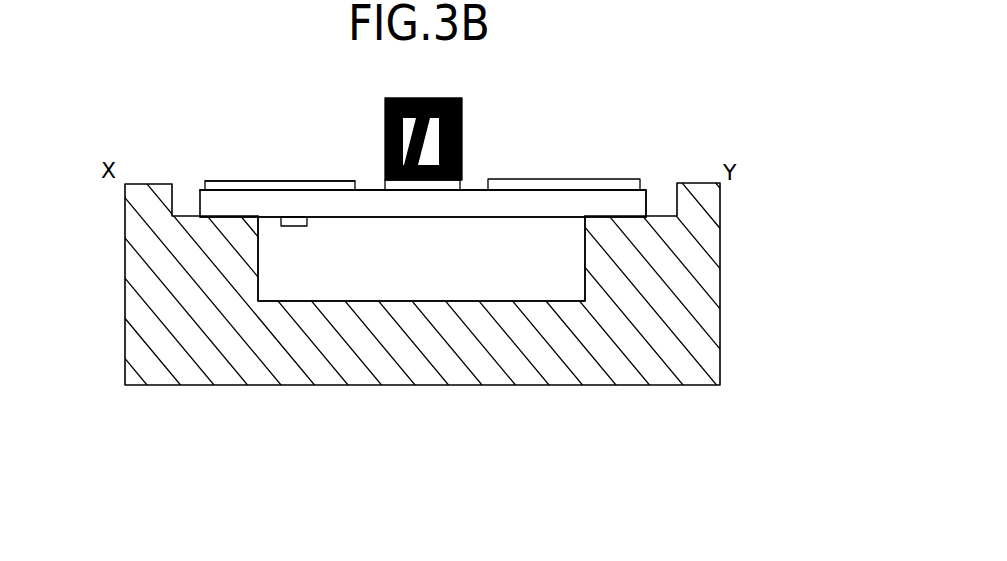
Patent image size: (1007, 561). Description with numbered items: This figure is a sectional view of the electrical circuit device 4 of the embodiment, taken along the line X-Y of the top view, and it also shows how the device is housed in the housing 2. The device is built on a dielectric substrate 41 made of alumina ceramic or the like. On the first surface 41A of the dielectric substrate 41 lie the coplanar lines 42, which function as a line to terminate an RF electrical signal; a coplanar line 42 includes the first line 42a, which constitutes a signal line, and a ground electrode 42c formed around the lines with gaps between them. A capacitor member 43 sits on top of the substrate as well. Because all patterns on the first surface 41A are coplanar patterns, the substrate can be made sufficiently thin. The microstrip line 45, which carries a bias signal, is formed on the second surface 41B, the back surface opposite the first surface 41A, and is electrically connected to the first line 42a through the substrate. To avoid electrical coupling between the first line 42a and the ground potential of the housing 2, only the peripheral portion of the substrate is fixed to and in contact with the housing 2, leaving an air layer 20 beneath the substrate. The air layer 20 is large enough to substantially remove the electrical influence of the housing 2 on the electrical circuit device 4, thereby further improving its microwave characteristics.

The housing 2 is at (660, 297).
The air layer 20 is at (417, 273).
The electrical circuit device 4 is at (650, 185).
The dielectric substrate 41 is at (590, 199).
The first surface 41A is at (525, 177).
The second surface 41B is at (470, 223).
The coplanar line 42 is at (213, 177).
The first line 42a is at (378, 189).
The ground electrode 42c is at (282, 182).
The capacitor member 43 is at (430, 98).
The microstrip line 45 is at (287, 226).